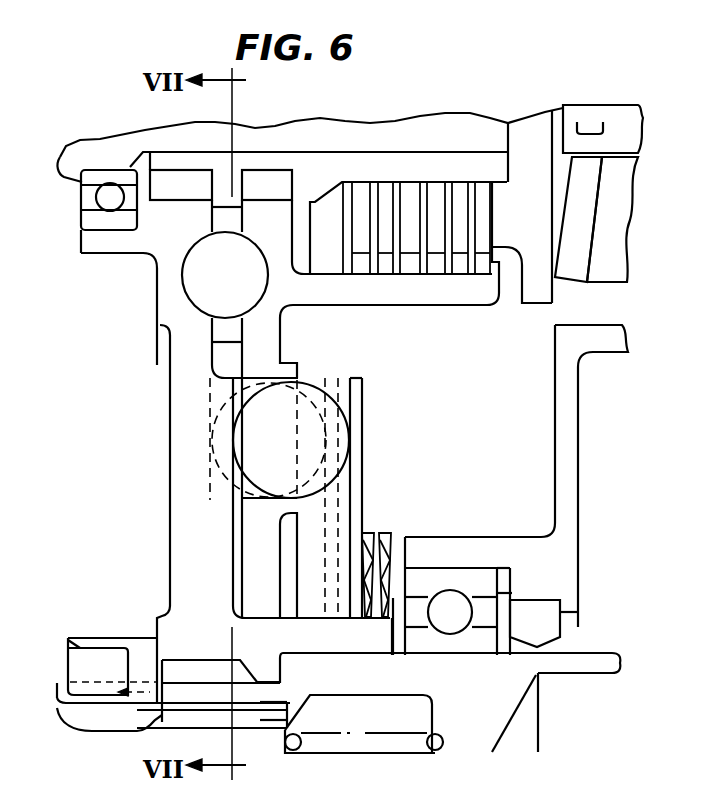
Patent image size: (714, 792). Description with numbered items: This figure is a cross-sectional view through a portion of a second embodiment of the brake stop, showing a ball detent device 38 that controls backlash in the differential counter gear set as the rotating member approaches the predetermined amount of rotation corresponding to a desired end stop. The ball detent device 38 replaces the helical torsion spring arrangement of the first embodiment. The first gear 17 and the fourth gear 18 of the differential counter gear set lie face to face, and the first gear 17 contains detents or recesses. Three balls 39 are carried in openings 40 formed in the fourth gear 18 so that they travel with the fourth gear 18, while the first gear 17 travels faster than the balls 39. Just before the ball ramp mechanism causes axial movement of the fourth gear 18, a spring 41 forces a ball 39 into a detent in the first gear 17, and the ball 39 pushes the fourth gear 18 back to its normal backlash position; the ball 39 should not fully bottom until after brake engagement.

The first gear 17 is at (175, 568).
The fourth gear 18 is at (252, 543).
The ball detent device 38 is at (388, 384).
The ball 39 is at (316, 380).
The opening 40 is at (260, 378).
The spring 41 is at (367, 533).